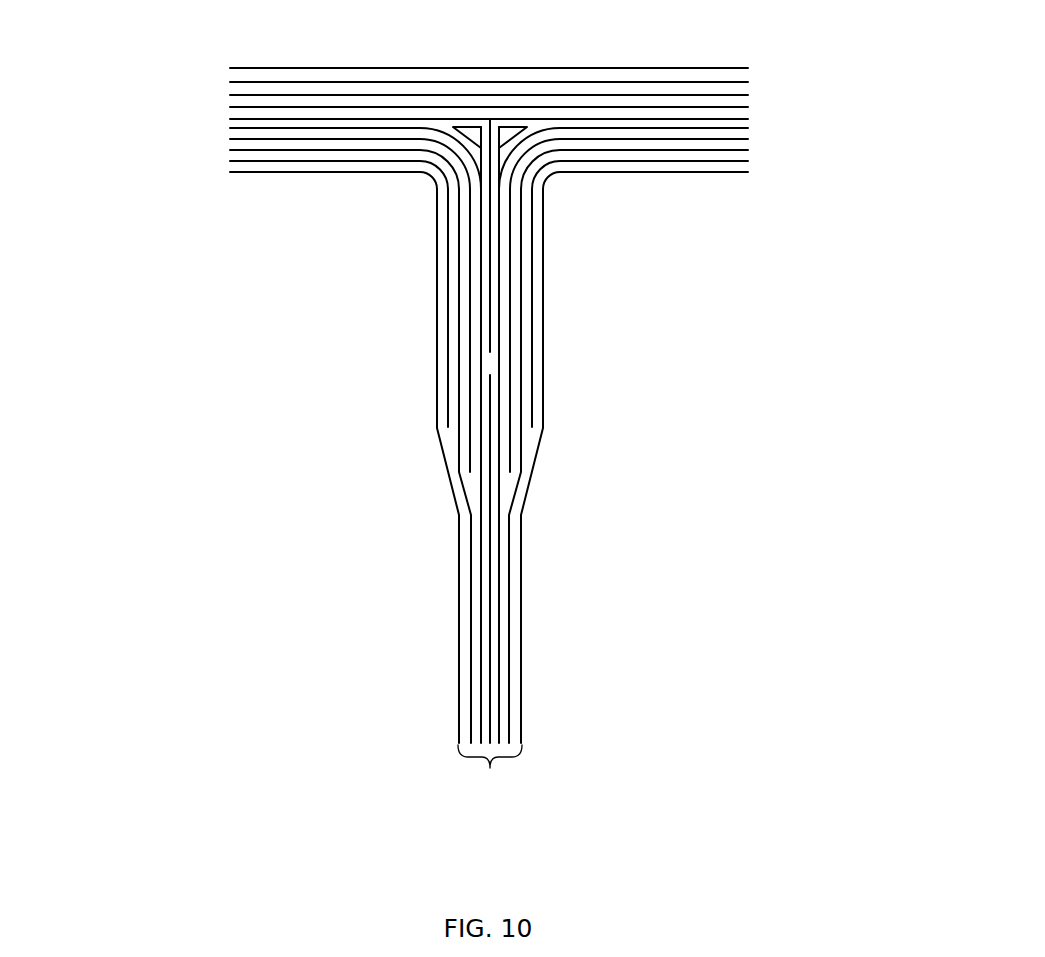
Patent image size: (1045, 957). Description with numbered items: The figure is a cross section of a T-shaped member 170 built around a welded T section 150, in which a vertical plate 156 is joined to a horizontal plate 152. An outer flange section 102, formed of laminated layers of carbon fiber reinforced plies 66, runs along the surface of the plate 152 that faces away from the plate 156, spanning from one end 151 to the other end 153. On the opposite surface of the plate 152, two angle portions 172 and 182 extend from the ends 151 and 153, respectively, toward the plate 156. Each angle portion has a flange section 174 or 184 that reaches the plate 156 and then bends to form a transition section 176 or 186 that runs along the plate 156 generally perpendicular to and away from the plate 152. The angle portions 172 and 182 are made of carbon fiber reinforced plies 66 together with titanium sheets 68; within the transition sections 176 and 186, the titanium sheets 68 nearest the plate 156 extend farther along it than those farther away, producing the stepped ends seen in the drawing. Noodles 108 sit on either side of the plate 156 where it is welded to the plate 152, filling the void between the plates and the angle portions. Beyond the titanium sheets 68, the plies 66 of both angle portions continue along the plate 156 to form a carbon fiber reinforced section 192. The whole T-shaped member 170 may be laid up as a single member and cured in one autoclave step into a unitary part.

The carbon fiber reinforced plies 66 is at (490, 795).
The titanium sheets 68 is at (230, 161).
The outer flange section 102 is at (222, 68).
The noodles 108 is at (465, 125).
The T section 150 is at (752, 120).
The end 151 is at (148, 126).
The plate 152 is at (618, 120).
The end 153 is at (803, 124).
The plate 156 is at (490, 352).
The T-shaped member 170 is at (226, 368).
The angle portion 172 is at (333, 275).
The flange section 174 is at (283, 174).
The transition section 176 is at (417, 200).
The angle portion 182 is at (627, 275).
The flange section 184 is at (645, 173).
The transition section 186 is at (560, 200).
The carbon fiber reinforced section 192 is at (458, 615).